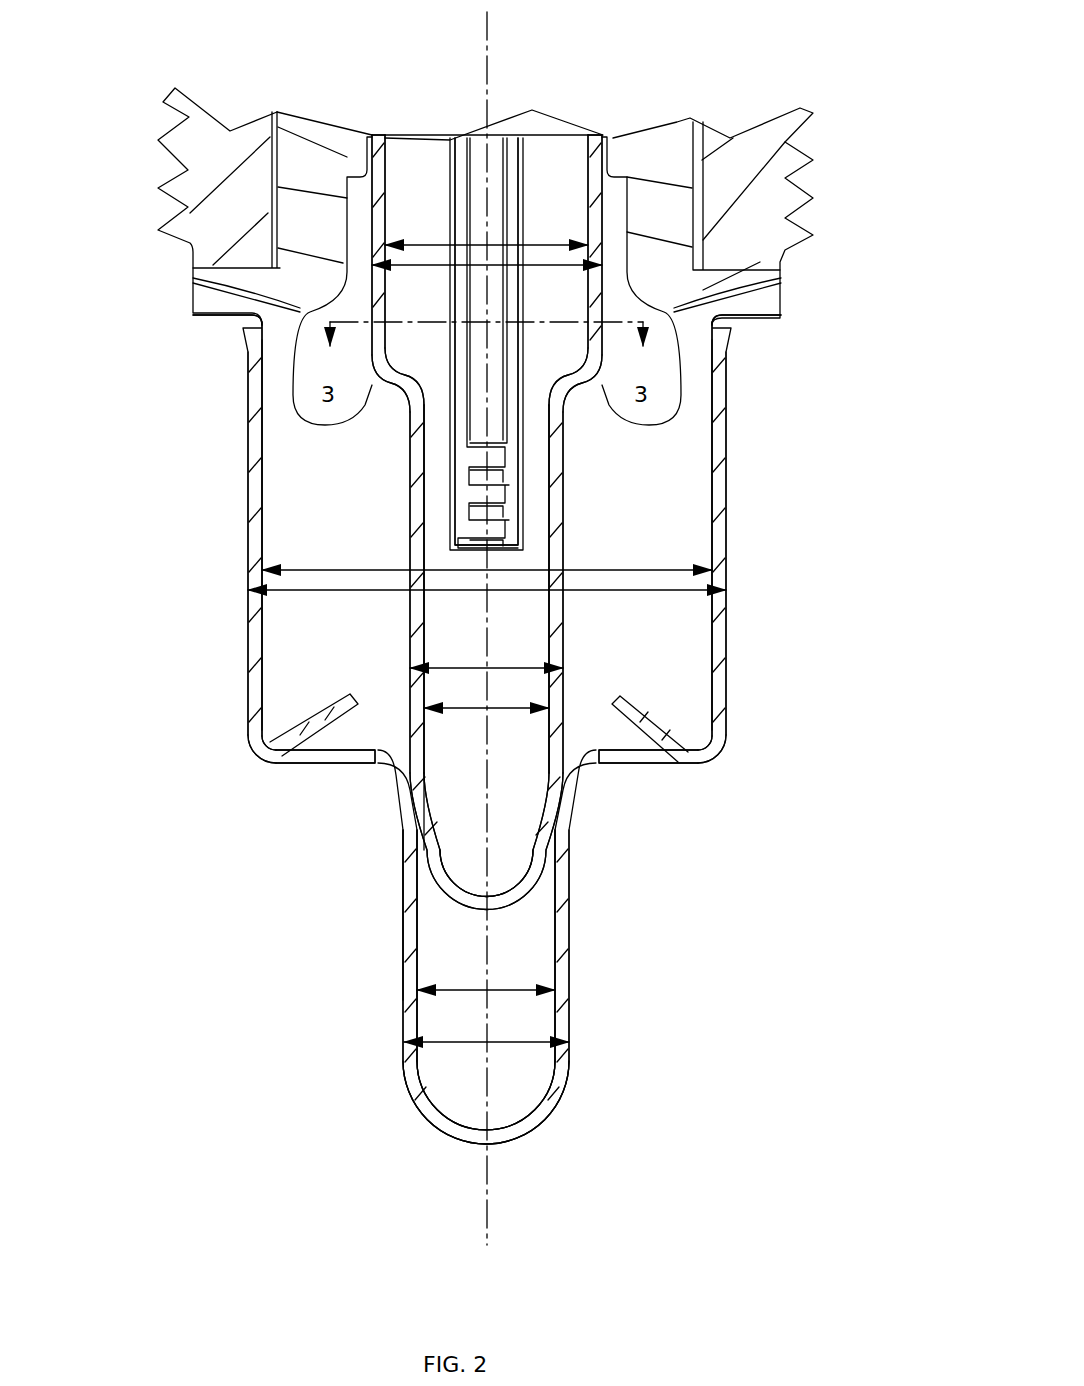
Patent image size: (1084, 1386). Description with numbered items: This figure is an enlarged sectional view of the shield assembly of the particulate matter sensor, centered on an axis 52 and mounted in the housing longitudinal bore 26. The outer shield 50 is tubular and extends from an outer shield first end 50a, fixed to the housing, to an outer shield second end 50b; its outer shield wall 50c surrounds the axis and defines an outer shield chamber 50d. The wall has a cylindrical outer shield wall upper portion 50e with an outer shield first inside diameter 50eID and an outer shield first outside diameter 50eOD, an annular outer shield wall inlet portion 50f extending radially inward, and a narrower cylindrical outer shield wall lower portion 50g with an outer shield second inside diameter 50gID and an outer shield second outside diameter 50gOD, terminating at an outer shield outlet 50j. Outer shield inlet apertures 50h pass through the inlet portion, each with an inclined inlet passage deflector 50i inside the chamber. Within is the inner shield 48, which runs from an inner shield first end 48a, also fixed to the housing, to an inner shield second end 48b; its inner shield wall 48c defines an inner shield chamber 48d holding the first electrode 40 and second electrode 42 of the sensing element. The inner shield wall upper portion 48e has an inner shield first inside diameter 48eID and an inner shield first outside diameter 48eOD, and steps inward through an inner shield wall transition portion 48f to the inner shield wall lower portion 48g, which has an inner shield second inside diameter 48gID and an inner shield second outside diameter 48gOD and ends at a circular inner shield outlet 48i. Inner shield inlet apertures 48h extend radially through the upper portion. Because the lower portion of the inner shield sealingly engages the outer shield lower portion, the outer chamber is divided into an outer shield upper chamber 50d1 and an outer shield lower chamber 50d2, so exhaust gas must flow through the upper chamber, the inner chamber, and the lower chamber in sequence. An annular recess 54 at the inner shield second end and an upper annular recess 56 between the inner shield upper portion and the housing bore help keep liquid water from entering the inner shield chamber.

The housing longitudinal bore 26 is at (680, 140).
The first electrode 40 is at (482, 532).
The second electrode 42 is at (497, 513).
The inner shield 48 is at (410, 472).
The inner shield first end 48a is at (375, 133).
The inner shield second end 48b is at (500, 905).
The inner shield wall 48c is at (336, 386).
The inner shield chamber 48d is at (443, 687).
The inner shield wall upper portion 48e is at (347, 178).
The inner shield first inside diameter 48eID is at (430, 244).
The inner shield first outside diameter 48eOD is at (600, 268).
The inner shield wall transition portion 48f is at (373, 390).
The inner shield wall lower portion 48g is at (413, 638).
The inner shield second inside diameter 48gID is at (503, 712).
The inner shield second outside diameter 48gOD is at (510, 667).
The inner shield inlet apertures 48h is at (345, 312).
The inner shield outlet 48i is at (457, 897).
The outer shield 50 is at (728, 495).
The outer shield first end 50a is at (705, 312).
The outer shield second end 50b is at (497, 1140).
The outer shield wall 50c is at (594, 733).
The outer shield chamber 50d is at (599, 700).
The outer shield upper chamber 50d1 is at (697, 457).
The outer shield lower chamber 50d2 is at (543, 1018).
The outer shield wall upper portion 50e is at (722, 412).
The outer shield first inside diameter 50eID is at (331, 569).
The outer shield first outside diameter 50eOD is at (648, 592).
The outer shield wall inlet portion 50f is at (378, 768).
The outer shield wall lower portion 50g is at (568, 900).
The outer shield second inside diameter 50gID is at (455, 992).
The outer shield second outside diameter 50gOD is at (442, 1044).
The outer shield inlet apertures 50h is at (340, 757).
The inlet passage deflector 50i is at (340, 713).
The outer shield outlet 50j is at (467, 1133).
The axis 52 is at (489, 1245).
The annular recess 54 is at (423, 877).
The upper annular recess 56 is at (614, 190).